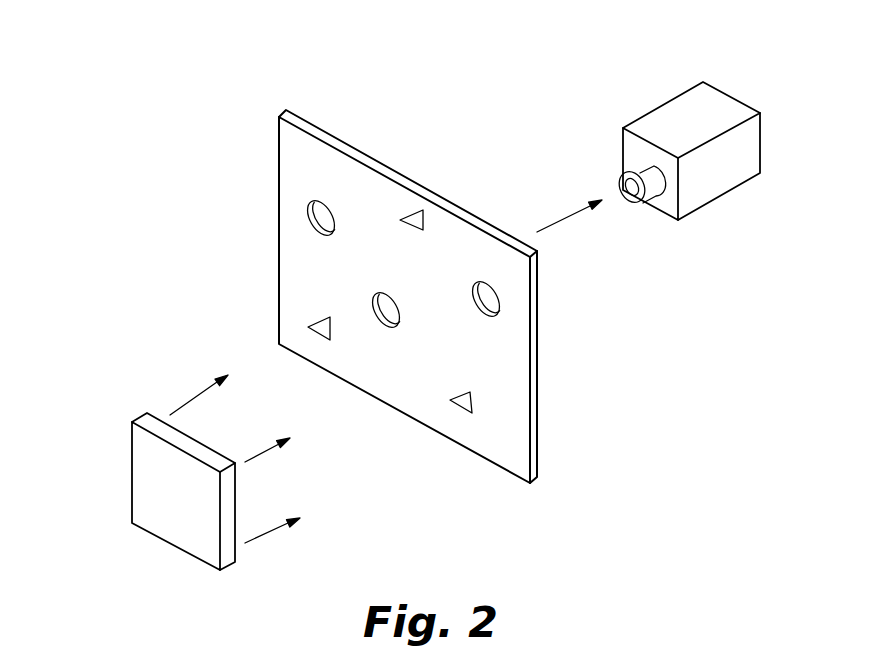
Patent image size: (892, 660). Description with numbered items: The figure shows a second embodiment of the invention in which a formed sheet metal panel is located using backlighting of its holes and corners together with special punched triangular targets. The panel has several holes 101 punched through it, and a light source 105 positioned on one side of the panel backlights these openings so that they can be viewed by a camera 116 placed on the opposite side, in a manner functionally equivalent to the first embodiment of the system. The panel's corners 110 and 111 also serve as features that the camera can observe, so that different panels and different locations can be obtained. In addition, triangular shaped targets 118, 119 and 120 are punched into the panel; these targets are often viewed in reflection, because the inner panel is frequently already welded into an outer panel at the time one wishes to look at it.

The holes 101 is at (317, 233).
The light source 105 is at (147, 467).
The corner 110 is at (337, 137).
The corner 111 is at (278, 117).
The camera 116 is at (689, 110).
The triangular shaped target 118 is at (423, 220).
The triangular shaped target 119 is at (473, 403).
The triangular shaped target 120 is at (320, 338).